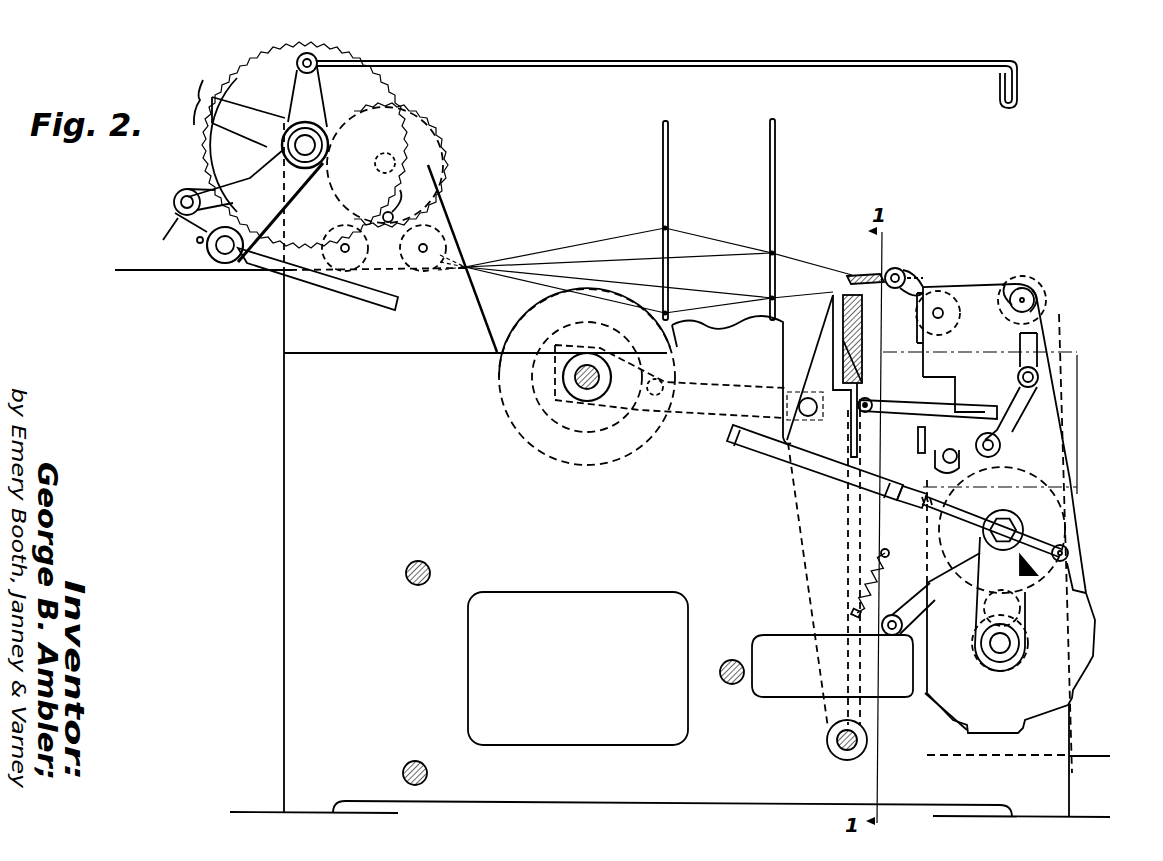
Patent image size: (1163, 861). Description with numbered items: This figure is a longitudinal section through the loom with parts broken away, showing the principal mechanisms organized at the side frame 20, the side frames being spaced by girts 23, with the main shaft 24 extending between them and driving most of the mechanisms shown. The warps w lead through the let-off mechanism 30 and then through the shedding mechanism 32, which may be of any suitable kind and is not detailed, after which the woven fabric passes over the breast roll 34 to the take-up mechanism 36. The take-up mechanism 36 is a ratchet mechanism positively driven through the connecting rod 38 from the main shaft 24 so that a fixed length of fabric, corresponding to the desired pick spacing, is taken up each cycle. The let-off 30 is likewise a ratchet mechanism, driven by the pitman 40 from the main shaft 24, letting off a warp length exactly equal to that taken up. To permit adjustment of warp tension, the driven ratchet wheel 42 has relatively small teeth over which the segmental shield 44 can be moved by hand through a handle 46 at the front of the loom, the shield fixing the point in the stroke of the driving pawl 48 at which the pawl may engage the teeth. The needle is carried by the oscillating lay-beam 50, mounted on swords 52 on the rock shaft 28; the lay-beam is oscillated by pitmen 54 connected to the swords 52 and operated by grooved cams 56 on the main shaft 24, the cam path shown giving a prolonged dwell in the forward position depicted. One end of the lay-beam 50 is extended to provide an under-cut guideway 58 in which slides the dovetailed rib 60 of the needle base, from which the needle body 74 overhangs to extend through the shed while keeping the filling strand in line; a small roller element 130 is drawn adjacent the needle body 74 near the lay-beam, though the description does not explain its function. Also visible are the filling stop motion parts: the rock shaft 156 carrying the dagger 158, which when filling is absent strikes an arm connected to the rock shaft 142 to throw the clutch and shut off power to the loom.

The side frame 20 is at (284, 448).
The girts 23 is at (440, 558).
The main shaft 24 is at (575, 377).
The rock shaft 28 is at (840, 745).
The let-off mechanism 30 is at (186, 102).
The shedding mechanism 32 is at (663, 152).
The breast roll 34 is at (1036, 297).
The take-up mechanism 36 is at (1100, 600).
The connecting rod 38 is at (750, 436).
The pitman 40 is at (352, 298).
The driven ratchet wheel 42 is at (258, 62).
The segmental shield 44 is at (200, 153).
The handle 46 is at (1020, 96).
The driving pawl 48 is at (205, 233).
The lay-beam 50 is at (842, 304).
The swords 52 is at (793, 521).
The pitmen 54 is at (727, 381).
The grooved cams 56 is at (600, 466).
The under-cut guideway 58 is at (862, 366).
The dovetailed rib 60 is at (862, 326).
The needle body 74 is at (860, 272).
The roller 130 is at (898, 268).
The rock shaft 142 is at (1040, 378).
The rock shaft 156 is at (867, 413).
The dagger 158 is at (966, 402).
The warps w is at (175, 272).